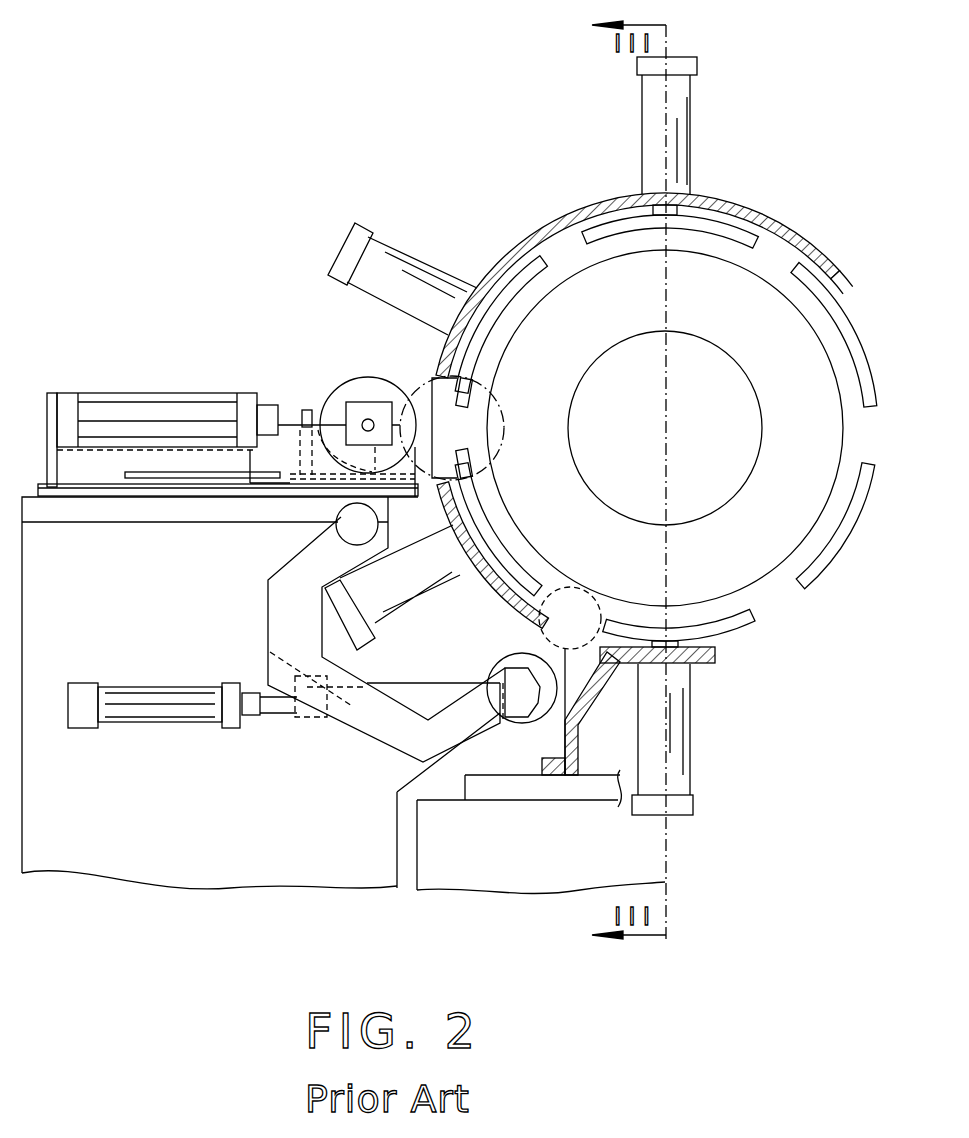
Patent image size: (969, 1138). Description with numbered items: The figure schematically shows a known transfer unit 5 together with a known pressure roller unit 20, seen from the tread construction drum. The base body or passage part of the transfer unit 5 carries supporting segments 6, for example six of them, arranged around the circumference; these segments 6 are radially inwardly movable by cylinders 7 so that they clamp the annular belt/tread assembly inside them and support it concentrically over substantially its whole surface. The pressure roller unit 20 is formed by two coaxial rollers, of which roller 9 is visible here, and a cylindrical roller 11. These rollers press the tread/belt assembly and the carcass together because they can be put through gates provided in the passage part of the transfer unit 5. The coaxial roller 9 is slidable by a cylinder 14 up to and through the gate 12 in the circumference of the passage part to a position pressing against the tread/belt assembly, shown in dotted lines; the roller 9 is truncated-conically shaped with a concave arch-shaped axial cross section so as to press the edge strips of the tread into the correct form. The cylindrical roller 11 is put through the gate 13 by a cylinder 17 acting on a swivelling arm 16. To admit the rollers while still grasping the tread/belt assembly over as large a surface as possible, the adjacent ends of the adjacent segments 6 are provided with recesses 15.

The transfer unit 5 is at (599, 201).
The supporting segments 6 is at (541, 258).
The cylinders 7 is at (676, 107).
The coaxial roller 9 is at (352, 392).
The cylindrical roller 11 is at (524, 712).
The gate 12 is at (441, 392).
The gate 13 is at (538, 618).
The cylinder 14 is at (183, 418).
The recesses 15 is at (470, 390).
The swivelling arm 16 is at (294, 611).
The cylinder 17 is at (173, 698).
The pressure roller unit 20 is at (103, 386).